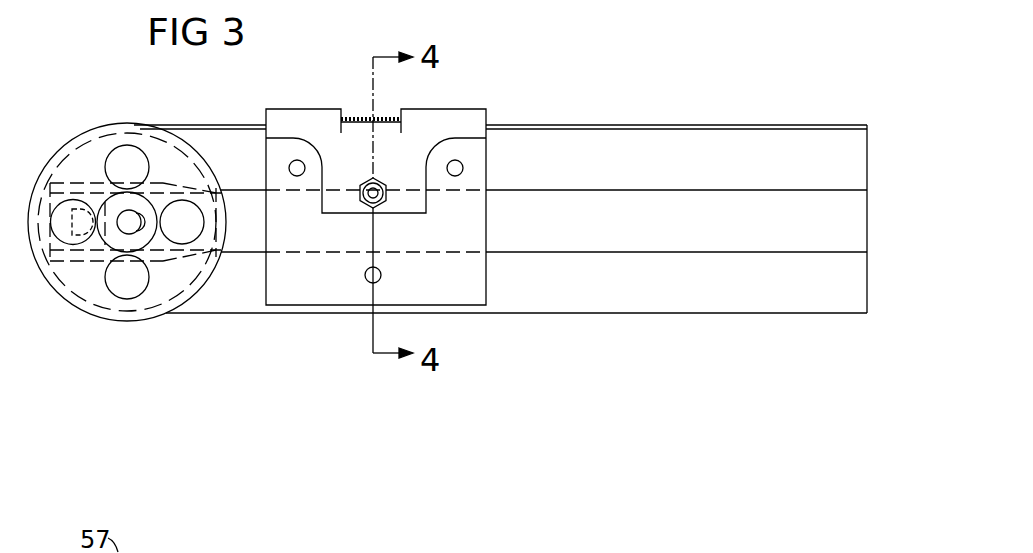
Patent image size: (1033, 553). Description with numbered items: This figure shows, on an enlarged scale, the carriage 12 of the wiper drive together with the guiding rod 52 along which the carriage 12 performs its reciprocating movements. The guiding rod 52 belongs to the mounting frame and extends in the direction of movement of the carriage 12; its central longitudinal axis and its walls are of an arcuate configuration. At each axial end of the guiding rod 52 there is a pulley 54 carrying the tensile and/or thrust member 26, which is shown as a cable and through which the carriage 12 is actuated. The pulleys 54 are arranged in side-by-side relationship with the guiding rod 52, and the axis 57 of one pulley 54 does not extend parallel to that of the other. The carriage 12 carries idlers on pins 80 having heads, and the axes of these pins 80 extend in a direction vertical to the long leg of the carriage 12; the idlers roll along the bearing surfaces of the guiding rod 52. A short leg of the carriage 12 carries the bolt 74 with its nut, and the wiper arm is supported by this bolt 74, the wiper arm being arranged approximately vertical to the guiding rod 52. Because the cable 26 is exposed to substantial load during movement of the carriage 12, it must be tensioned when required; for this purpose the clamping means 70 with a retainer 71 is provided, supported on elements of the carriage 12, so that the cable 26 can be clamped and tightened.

The carriage 12 is at (528, 99).
The tensile and/or thrust member 26 is at (707, 314).
The guiding rod 52 is at (732, 187).
The pulley 54 is at (100, 86).
The axis of the pulley 57 is at (122, 226).
The clamping means 70 is at (352, 96).
The retainer 71 is at (347, 118).
The bolt 74 is at (381, 181).
The pin 80 is at (291, 162).